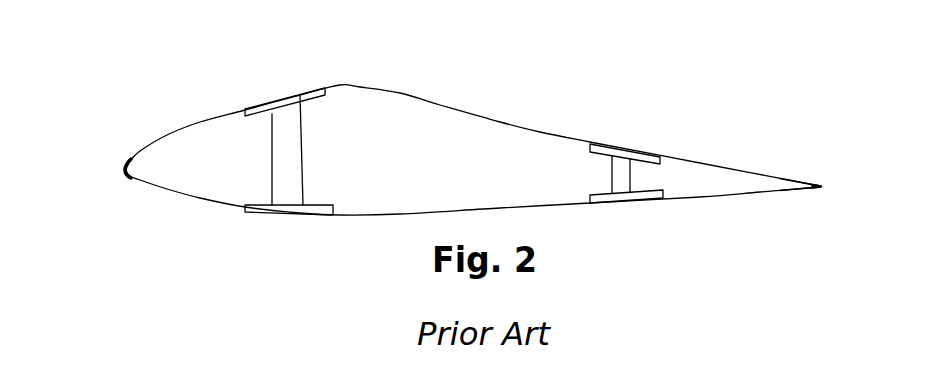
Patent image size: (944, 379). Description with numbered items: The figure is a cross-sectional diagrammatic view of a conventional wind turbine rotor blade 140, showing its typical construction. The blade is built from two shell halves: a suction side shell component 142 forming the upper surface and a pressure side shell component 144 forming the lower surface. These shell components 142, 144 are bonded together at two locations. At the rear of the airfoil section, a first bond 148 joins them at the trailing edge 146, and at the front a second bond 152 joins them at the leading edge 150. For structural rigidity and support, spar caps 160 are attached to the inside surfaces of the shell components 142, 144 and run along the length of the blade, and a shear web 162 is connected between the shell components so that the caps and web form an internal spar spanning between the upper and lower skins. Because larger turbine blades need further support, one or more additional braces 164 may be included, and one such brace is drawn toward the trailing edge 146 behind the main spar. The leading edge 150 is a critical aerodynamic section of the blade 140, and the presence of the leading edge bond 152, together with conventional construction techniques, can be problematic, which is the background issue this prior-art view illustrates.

The rotor blade 140 is at (557, 80).
The suction side shell component 142 is at (393, 98).
The pressure side shell component 144 is at (348, 215).
The trailing edge 146 is at (830, 152).
The first bond 148 is at (813, 193).
The leading edge 150 is at (122, 148).
The second bond 152 is at (117, 168).
The spar caps 160 is at (298, 215).
The shear web 162 is at (282, 152).
The additional brace 164 is at (630, 172).